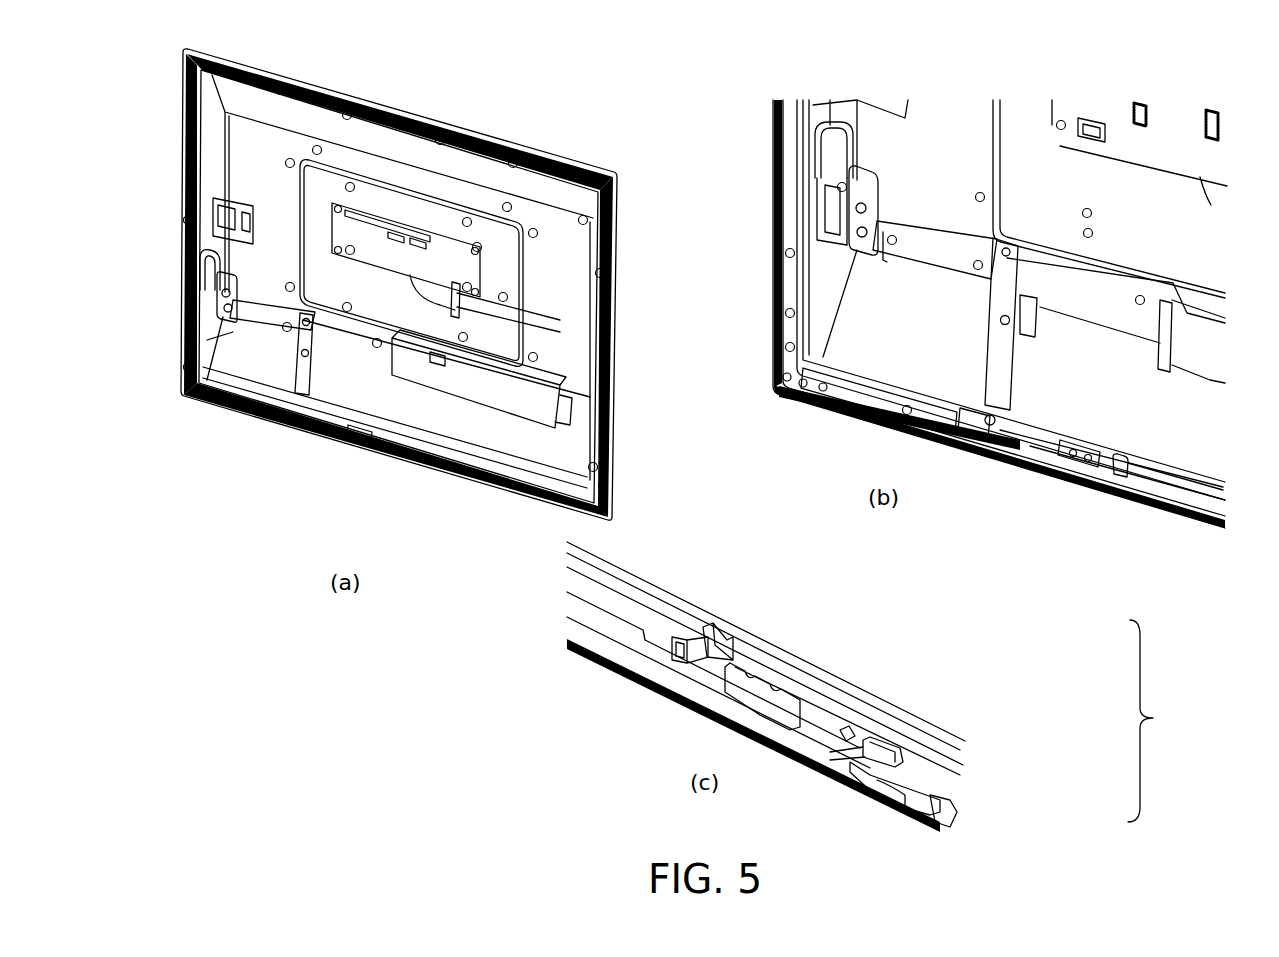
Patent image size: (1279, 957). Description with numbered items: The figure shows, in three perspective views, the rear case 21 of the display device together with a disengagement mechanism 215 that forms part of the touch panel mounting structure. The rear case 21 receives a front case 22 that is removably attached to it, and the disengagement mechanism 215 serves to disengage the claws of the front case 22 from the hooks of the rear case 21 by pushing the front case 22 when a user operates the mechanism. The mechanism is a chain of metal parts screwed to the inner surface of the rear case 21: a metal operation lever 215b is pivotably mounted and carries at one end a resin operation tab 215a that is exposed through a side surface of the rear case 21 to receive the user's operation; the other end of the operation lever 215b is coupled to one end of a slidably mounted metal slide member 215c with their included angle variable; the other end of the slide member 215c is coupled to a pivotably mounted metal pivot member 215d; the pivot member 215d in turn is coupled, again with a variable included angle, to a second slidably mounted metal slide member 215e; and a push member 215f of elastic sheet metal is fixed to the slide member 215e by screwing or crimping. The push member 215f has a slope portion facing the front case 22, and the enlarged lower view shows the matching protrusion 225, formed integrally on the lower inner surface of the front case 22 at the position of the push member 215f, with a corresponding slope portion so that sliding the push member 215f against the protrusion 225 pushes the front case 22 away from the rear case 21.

The rear case 21 is at (299, 456).
The front case 22 is at (851, 644).
The disengagement mechanism 215 is at (1169, 721).
The operation tab 215a is at (213, 249).
The operation lever 215b is at (866, 187).
The slide member 215c is at (932, 250).
The pivot member 215d is at (1008, 364).
The slide member 215e is at (1183, 482).
The push member 215f is at (358, 449).
The protrusion 225 is at (725, 640).